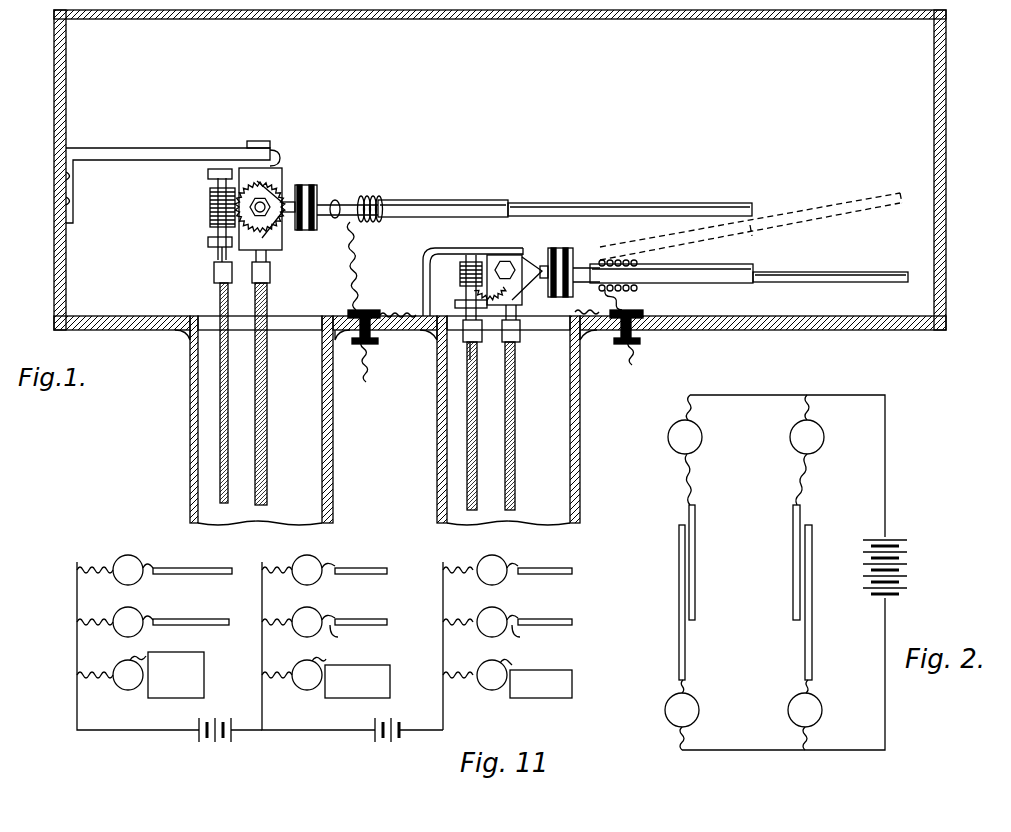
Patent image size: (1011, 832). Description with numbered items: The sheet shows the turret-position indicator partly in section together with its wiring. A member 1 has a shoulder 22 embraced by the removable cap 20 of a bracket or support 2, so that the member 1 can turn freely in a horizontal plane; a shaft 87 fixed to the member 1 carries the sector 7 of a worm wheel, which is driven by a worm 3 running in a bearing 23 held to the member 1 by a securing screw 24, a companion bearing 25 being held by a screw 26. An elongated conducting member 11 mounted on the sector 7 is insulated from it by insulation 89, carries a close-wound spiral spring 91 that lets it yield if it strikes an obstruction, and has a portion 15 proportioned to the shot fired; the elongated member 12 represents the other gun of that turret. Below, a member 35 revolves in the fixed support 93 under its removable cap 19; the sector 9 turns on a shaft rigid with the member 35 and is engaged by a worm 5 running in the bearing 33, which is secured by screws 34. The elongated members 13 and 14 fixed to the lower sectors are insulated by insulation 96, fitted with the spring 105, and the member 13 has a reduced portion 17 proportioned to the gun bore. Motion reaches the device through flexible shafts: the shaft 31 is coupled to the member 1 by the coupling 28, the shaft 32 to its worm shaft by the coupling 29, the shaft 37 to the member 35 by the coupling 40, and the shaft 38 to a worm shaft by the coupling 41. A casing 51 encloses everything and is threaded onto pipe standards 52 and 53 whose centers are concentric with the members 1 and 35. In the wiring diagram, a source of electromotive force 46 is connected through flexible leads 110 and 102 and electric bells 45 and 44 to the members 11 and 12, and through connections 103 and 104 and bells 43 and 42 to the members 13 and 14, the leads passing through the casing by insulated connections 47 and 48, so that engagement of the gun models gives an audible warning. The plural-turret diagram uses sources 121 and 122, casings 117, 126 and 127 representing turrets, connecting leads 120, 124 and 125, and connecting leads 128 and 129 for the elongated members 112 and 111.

In FIG. 1, the member 1 is at (282, 180).
In FIG. 1, the bracket or support 2 is at (168, 176).
In FIG. 1, the worm 3 is at (210, 207).
In FIG. 1, the worm 5 is at (460, 270).
In FIG. 1, the worm wheel sector 7 is at (259, 207).
In FIG. 1, the worm wheel sector 9 is at (508, 280).
In FIG. 1, the elongated member 11 is at (443, 196).
In FIG. 2, the elongated member 11 is at (821, 602).
In FIG. 11, the elongated member 11 is at (191, 613).
In FIG. 2, the elongated member 12 is at (694, 602).
In FIG. 11, the elongated member 12 is at (192, 562).
In FIG. 1, the elongated member 13 is at (671, 263).
In FIG. 2, the elongated member 13 is at (781, 562).
In FIG. 11, the elongated member 13 is at (325, 618).
In FIG. 2, the elongated member 14 is at (705, 562).
In FIG. 11, the elongated member 14 is at (365, 562).
In FIG. 1, the portion of member 11 15 is at (630, 197).
In FIG. 1, the reduced portion 17 is at (830, 265).
In FIG. 1, the removable cap 19 is at (523, 248).
In FIG. 1, the removable cap 20 is at (281, 153).
In FIG. 1, the shoulder 22 is at (258, 141).
In FIG. 1, the bearing 23 is at (212, 183).
In FIG. 1, the securing screw 24 is at (208, 174).
In FIG. 1, the bearing 25 is at (214, 250).
In FIG. 1, the securing screw 26 is at (208, 242).
In FIG. 1, the coupling 28 is at (270, 282).
In FIG. 1, the coupling 29 is at (214, 282).
In FIG. 1, the flexible shaft 31 is at (272, 394).
In FIG. 1, the flexible shaft 32 is at (234, 393).
In FIG. 1, the bearing 33 is at (463, 338).
In FIG. 1, the screws 34 is at (460, 316).
In FIG. 1, the member 35 is at (518, 310).
In FIG. 1, the flexible shaft 37 is at (516, 462).
In FIG. 1, the flexible shaft 38 is at (478, 440).
In FIG. 1, the coupling 40 is at (520, 336).
In FIG. 1, the coupling 41 is at (480, 342).
In FIG. 2, the electric bell 42 is at (698, 424).
In FIG. 2, the electric bell 43 is at (820, 424).
In FIG. 2, the electric bell 44 is at (695, 721).
In FIG. 2, the electric bell 45 is at (818, 721).
In FIG. 2, the source of electromotive force 46 is at (906, 570).
In FIG. 1, the insulated connection 47 is at (364, 310).
In FIG. 1, the insulated connection 48 is at (643, 310).
In FIG. 1, the casing 51 is at (946, 152).
In FIG. 1, the pipe standard 52 is at (251, 420).
In FIG. 1, the pipe standard 53 is at (499, 420).
In FIG. 1, the shaft 87 is at (283, 238).
In FIG. 1, the insulation 89 is at (312, 190).
In FIG. 1, the close wound spiral spring 91 is at (362, 222).
In FIG. 1, the fixed support 93 is at (423, 278).
In FIG. 1, the insulation 96 is at (562, 248).
In FIG. 2, the flexible lead 102 is at (656, 686).
In FIG. 11, the flexible lead 102 is at (128, 561).
In FIG. 1, the flexible connection 103 is at (594, 305).
In FIG. 2, the flexible connection 103 is at (820, 479).
In FIG. 11, the flexible connection 103 is at (349, 640).
In FIG. 2, the flexible connection 104 is at (709, 479).
In FIG. 11, the flexible connection 104 is at (309, 561).
In FIG. 1, the spiral close wound spring 105 is at (628, 260).
In FIG. 1, the flexible lead 110 is at (350, 268).
In FIG. 2, the flexible lead 110 is at (827, 686).
In FIG. 11, the flexible lead 110 is at (126, 613).
In FIG. 11, the elongated member 111 is at (517, 618).
In FIG. 11, the elongated member 112 is at (559, 562).
In FIG. 11, the casing representing turret 117 is at (541, 696).
In FIG. 11, the connecting lead 120 is at (462, 670).
In FIG. 11, the source of electromotive force 121 is at (384, 744).
In FIG. 11, the source of electromotive force 122 is at (213, 744).
In FIG. 11, the connecting lead 124 is at (278, 670).
In FIG. 11, the connecting lead 125 is at (92, 670).
In FIG. 11, the casing representing turret 126 is at (351, 693).
In FIG. 11, the casing representing turret 127 is at (162, 700).
In FIG. 11, the connecting lead 128 is at (492, 561).
In FIG. 11, the connecting lead 129 is at (537, 640).